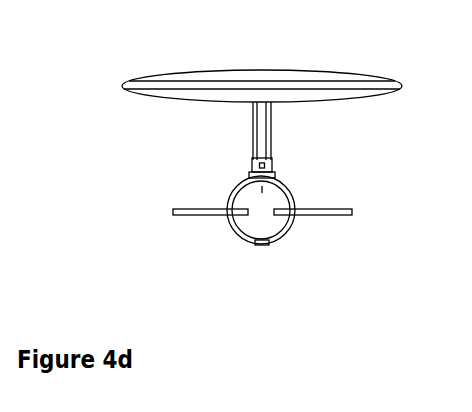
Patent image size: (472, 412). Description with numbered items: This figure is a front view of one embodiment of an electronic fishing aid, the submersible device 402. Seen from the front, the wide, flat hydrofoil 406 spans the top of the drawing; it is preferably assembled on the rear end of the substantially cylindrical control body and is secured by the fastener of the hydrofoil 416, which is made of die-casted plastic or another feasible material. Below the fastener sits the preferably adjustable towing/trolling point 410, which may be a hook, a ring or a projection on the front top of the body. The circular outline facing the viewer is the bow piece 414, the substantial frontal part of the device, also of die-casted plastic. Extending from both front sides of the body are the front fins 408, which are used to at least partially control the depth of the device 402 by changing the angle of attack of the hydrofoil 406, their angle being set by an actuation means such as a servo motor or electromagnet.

The submersible device 402 is at (278, 38).
The hydrofoil 406 is at (208, 70).
The front fins 408 is at (198, 209).
The towing/trolling point 410 is at (252, 176).
The bow piece 414 is at (262, 247).
The fastener of the hydrofoil 416 is at (272, 128).